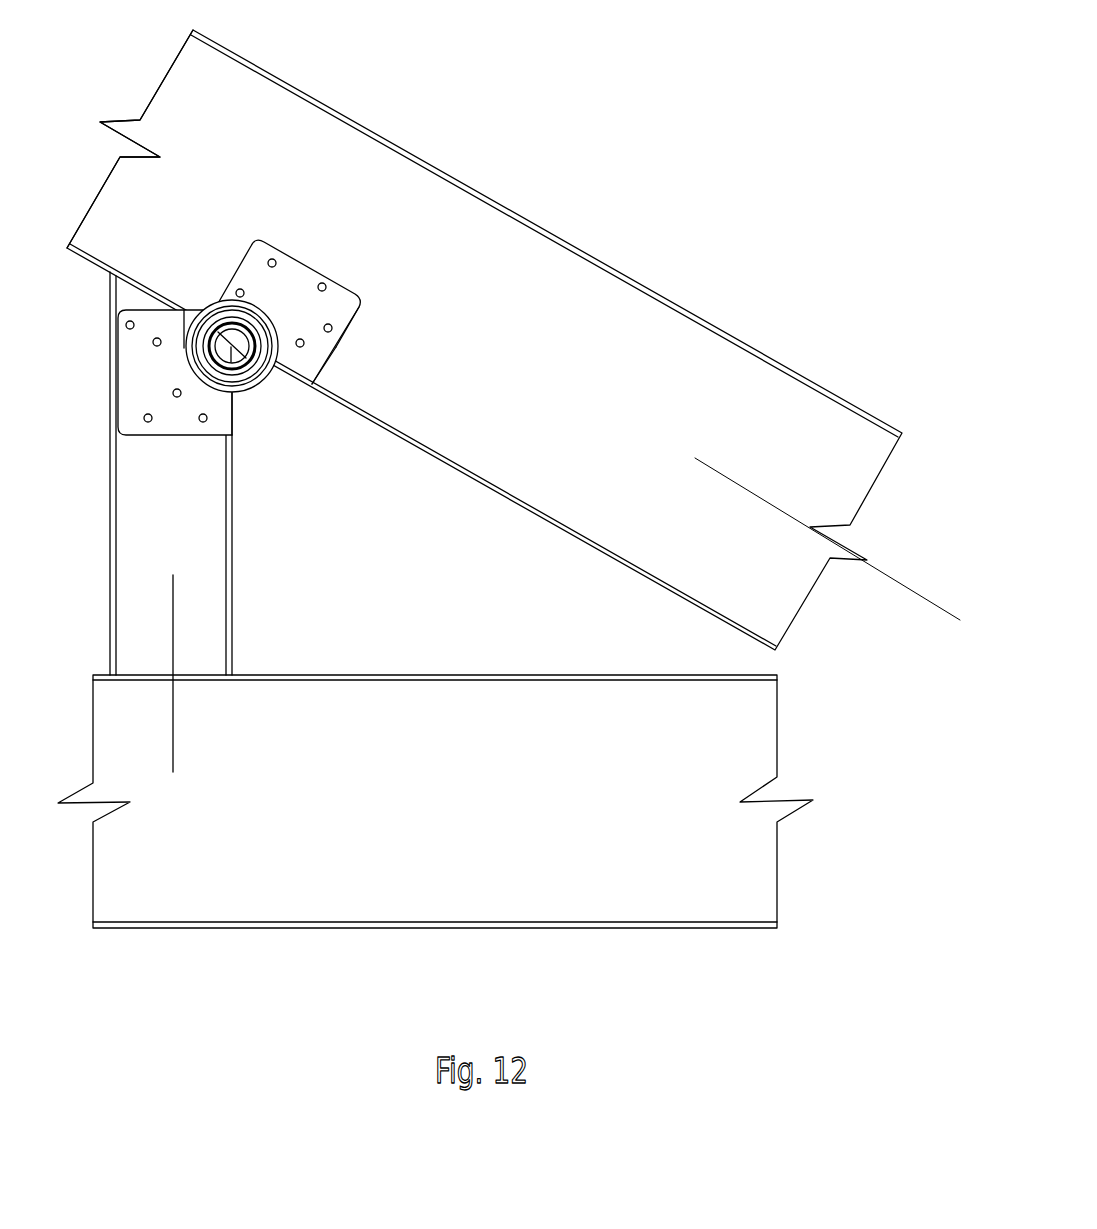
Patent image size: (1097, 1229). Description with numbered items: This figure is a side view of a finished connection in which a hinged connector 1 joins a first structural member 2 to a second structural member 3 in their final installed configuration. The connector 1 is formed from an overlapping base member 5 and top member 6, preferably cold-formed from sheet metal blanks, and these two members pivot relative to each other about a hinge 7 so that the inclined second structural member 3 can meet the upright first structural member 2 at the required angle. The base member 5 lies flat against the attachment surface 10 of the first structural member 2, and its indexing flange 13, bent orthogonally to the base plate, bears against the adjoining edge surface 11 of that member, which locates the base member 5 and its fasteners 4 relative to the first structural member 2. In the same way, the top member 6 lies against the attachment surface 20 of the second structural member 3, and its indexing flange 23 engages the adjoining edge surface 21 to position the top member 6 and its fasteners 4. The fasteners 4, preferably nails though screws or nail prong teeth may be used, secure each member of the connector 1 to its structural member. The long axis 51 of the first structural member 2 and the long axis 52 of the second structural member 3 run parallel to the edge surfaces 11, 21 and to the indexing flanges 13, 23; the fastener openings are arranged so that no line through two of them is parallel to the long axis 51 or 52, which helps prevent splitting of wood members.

The hinged connector 1 is at (368, 280).
The first structural member 2 is at (240, 523).
The second structural member 3 is at (430, 465).
The fasteners 4 is at (265, 262).
The base member 5 is at (210, 437).
The top member 6 is at (353, 327).
The hinge 7 is at (250, 390).
The attachment surface 10 is at (140, 506).
The adjoining edge surface 11 is at (233, 582).
The indexing flange 13 is at (235, 428).
The attachment surface 20 is at (127, 211).
The adjoining edge surface 21 is at (378, 430).
The indexing flange 23 is at (312, 385).
The long axis 51 is at (173, 725).
The long axis 52 is at (890, 577).